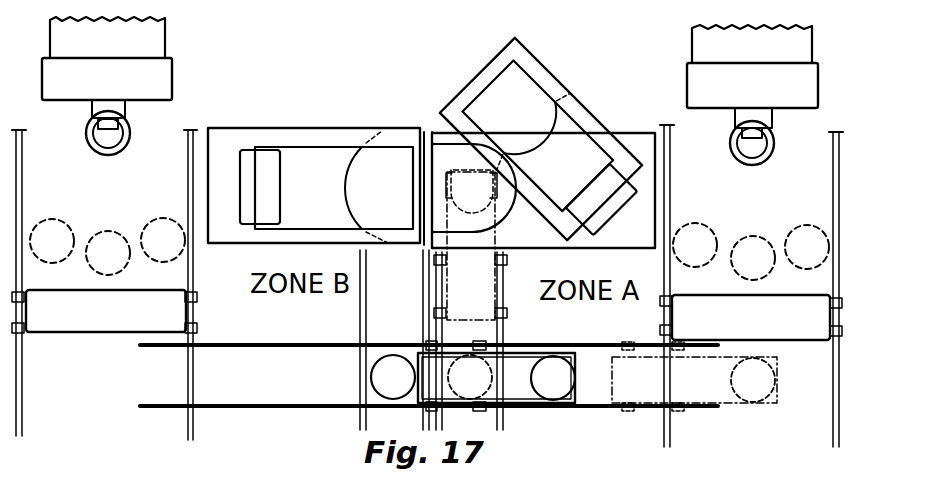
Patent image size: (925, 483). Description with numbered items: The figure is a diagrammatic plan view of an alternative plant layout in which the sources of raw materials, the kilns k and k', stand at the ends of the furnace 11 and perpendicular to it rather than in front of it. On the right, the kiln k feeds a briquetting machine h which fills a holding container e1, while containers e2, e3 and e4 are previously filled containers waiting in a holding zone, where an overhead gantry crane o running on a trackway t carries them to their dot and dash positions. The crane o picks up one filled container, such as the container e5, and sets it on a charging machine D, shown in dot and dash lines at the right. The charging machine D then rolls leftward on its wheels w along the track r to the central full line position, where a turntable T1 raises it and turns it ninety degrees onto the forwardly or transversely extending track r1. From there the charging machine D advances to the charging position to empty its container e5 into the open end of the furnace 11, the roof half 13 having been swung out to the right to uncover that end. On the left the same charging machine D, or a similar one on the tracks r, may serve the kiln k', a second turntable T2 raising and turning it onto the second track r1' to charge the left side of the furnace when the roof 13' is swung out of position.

The roof half 13 is at (546, 144).
The roof 13' is at (314, 172).
The furnace 11 is at (456, 164).
The kiln k is at (752, 76).
The kiln k' is at (107, 86).
The briquetting machine h is at (760, 134).
The holding container e1 is at (776, 147).
The container e2 is at (701, 222).
The container e3 is at (762, 232).
The container e4 is at (811, 226).
The container e5 is at (488, 208).
The trackway t is at (671, 188).
The overhead gantry crane o is at (758, 328).
The track r is at (244, 347).
The transversely extending track r1 is at (473, 340).
The second track r1' is at (390, 340).
The wheels w is at (507, 260).
The charging machine D is at (789, 378).
The turntable T1 is at (492, 378).
The turntable T2 is at (371, 372).